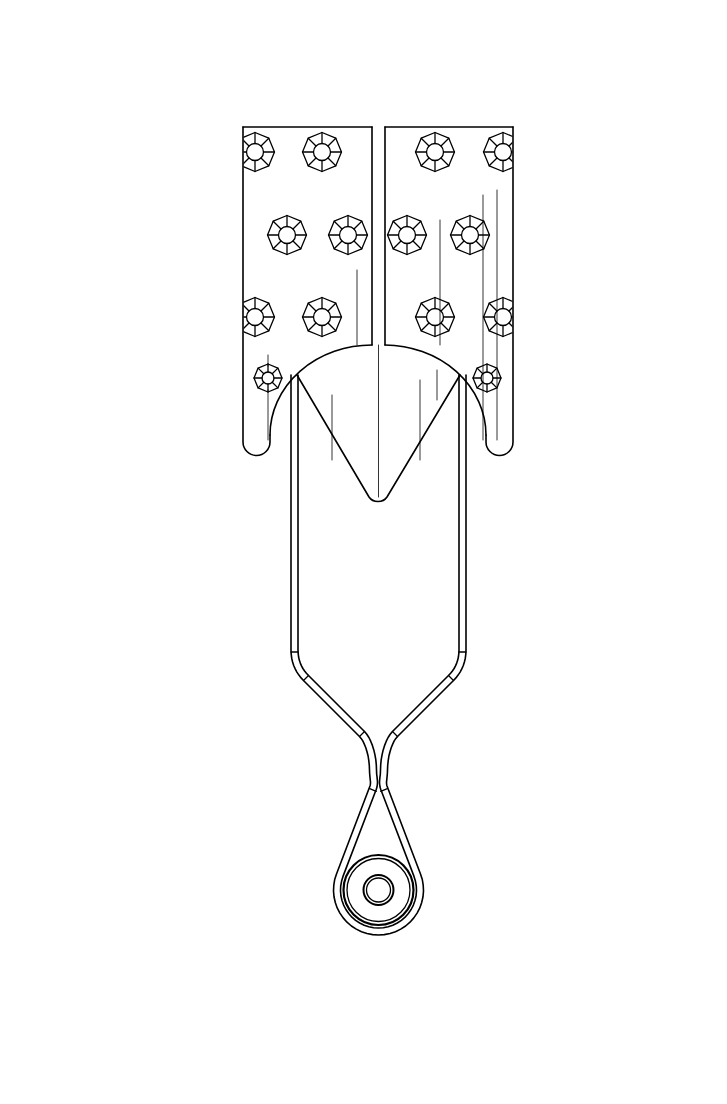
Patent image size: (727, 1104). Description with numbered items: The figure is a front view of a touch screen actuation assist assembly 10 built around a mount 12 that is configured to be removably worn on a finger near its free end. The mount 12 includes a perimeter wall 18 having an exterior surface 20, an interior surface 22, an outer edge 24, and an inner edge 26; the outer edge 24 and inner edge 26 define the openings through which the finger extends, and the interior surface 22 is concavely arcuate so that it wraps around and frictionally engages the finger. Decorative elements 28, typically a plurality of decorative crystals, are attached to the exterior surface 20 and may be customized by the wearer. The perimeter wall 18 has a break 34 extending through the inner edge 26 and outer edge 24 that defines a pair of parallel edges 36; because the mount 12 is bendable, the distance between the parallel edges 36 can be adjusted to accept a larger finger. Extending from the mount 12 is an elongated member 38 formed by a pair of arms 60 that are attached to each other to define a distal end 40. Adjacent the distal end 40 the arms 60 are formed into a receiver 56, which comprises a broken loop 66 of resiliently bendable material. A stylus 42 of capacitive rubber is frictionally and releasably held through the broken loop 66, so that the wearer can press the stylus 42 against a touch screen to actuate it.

The touch screen actuation assist assembly 10 is at (91, 90).
The mount 12 is at (557, 187).
The perimeter wall 18 is at (465, 275).
The exterior surface 20 is at (243, 255).
The interior surface 22 is at (350, 427).
The outer edge 24 is at (350, 563).
The inner edge 26 is at (463, 127).
The decorative elements 28 is at (518, 319).
The break 34 is at (381, 108).
The pair of parallel edges 36 is at (371, 134).
The elongated member 38 is at (517, 638).
The distal end 40 is at (383, 930).
The stylus 42 is at (362, 889).
The receiver 56 is at (337, 843).
The pair of arms 60 is at (287, 543).
The broken loop 66 is at (406, 847).